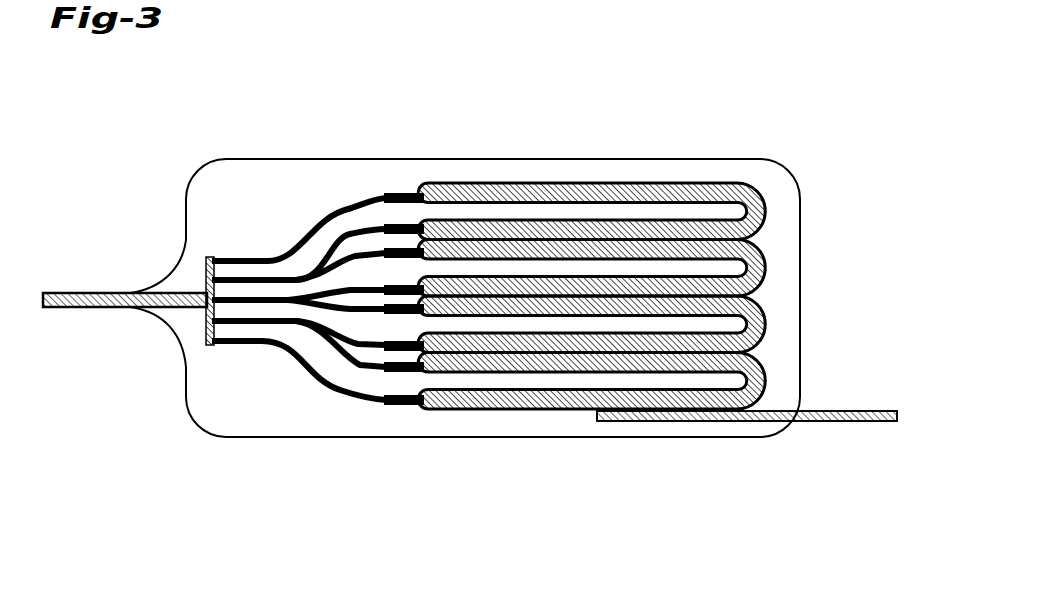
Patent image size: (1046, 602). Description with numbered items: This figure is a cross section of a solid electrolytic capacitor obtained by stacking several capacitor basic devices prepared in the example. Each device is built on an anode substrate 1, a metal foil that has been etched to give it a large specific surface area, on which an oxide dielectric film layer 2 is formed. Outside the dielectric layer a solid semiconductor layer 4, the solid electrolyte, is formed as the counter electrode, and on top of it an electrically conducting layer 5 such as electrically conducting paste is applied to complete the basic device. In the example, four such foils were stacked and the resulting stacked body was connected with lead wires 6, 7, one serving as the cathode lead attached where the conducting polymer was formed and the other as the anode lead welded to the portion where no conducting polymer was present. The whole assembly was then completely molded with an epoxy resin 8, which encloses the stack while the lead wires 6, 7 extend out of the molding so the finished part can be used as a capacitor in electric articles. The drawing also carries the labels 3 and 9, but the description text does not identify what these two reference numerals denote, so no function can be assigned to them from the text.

The anode substrate 1 is at (235, 267).
The oxide dielectric film layer 2 is at (293, 242).
The connection pad 3 is at (405, 192).
The solid semiconductor layer 4 is at (472, 182).
The electrically conducting layer 5 is at (203, 345).
The lead wire 6 is at (73, 293).
The lead wire 7 is at (767, 423).
The epoxy resin 8 is at (353, 437).
The sensor element 9 is at (713, 124).